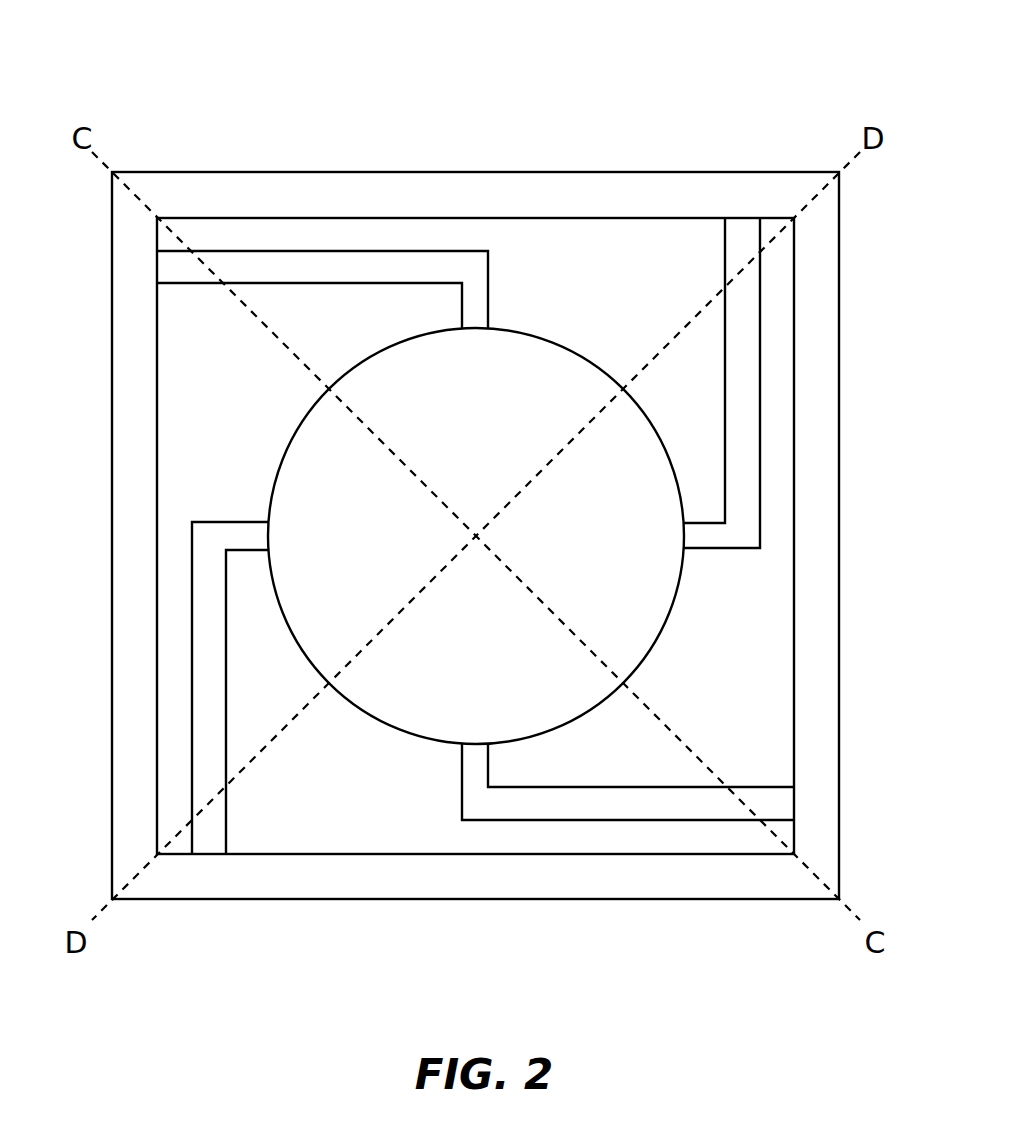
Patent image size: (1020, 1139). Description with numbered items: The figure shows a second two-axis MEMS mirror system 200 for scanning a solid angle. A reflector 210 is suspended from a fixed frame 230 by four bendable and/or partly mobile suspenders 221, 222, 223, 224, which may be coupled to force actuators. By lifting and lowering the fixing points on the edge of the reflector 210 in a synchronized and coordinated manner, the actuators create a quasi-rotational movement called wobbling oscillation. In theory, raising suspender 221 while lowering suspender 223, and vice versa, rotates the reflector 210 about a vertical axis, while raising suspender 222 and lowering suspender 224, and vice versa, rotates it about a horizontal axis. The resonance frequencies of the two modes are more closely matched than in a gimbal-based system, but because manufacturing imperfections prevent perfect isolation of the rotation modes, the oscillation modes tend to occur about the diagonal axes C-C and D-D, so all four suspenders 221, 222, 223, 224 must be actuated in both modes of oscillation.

The two-axis MEMS mirror system 200 is at (613, 95).
The reflector 210 is at (650, 653).
The suspender 221 is at (488, 320).
The suspender 222 is at (760, 535).
The suspender 223 is at (592, 820).
The suspender 224 is at (192, 548).
The fixed frame 230 is at (746, 172).